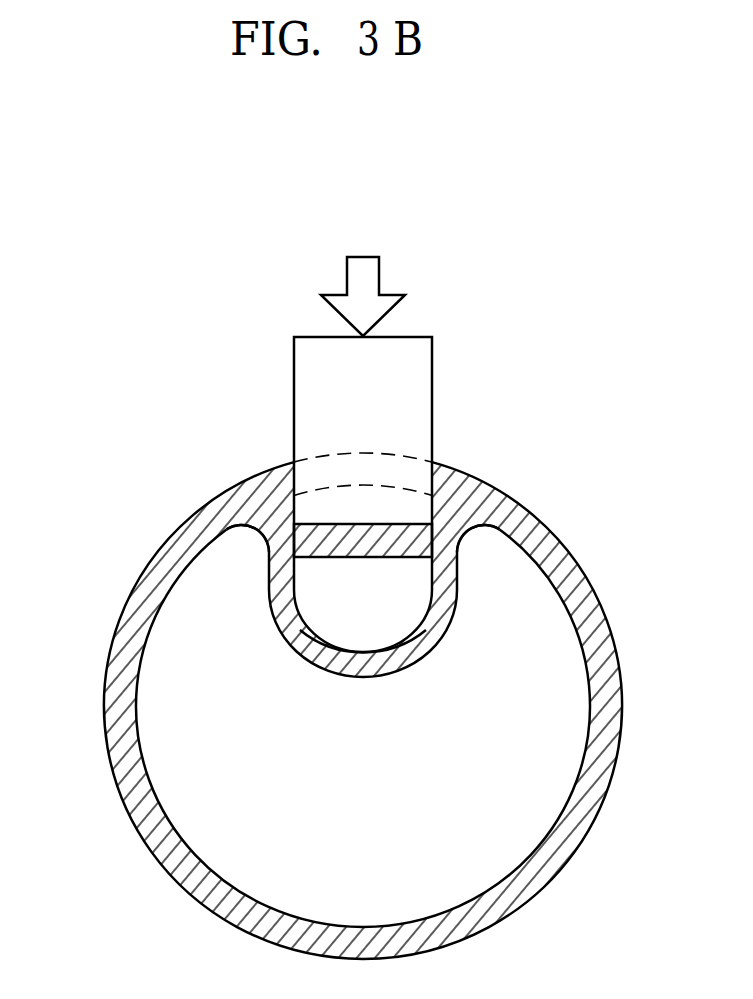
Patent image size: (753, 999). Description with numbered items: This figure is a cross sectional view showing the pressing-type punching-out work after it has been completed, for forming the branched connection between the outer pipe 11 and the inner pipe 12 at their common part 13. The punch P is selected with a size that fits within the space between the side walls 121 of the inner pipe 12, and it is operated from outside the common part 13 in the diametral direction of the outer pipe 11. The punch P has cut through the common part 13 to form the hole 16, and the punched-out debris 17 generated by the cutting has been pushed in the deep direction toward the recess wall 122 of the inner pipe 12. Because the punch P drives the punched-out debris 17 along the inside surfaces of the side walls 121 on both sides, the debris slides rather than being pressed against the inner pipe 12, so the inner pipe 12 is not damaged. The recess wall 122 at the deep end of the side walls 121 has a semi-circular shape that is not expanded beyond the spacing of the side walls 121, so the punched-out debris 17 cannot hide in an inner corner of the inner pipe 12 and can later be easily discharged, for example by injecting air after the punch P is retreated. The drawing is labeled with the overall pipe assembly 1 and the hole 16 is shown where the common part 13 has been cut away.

The tubular member 1 is at (175, 880).
The outer pipe 11 is at (176, 530).
The inner pipe 12 is at (382, 680).
The side walls 121 is at (267, 578).
The recess wall 122 is at (328, 677).
The common part 13 is at (388, 453).
The hole 16 is at (335, 470).
The punched-out debris 17 is at (353, 560).
The punch P is at (294, 346).